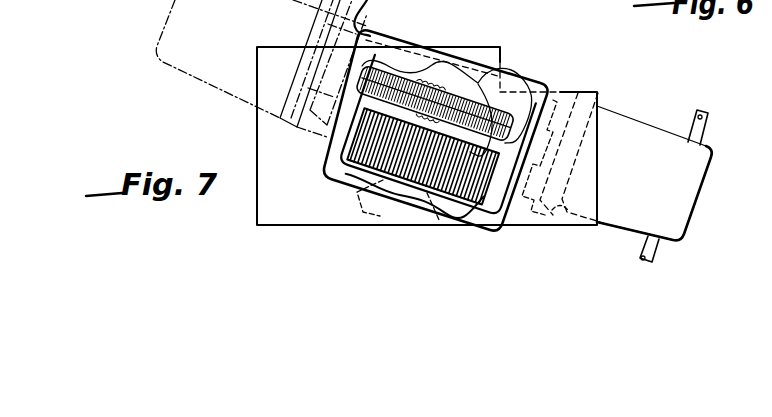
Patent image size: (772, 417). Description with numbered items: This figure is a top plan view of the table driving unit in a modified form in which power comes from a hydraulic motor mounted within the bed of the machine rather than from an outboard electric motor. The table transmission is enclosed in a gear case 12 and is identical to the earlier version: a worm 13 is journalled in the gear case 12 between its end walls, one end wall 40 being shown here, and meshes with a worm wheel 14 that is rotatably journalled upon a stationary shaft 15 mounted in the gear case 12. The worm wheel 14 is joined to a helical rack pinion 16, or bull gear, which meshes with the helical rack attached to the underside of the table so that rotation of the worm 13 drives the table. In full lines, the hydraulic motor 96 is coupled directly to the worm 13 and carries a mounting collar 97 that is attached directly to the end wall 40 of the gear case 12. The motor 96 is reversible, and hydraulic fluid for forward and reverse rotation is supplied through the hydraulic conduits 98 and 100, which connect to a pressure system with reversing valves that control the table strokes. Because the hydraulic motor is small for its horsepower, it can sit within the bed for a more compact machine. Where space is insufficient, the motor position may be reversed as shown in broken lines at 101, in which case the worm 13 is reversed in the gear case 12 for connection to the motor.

The gear case 12 is at (529, 79).
The worm 13 is at (511, 72).
The worm wheel 14 is at (400, 88).
The stationary shaft 15 is at (393, 179).
The helical rack pinion 16 is at (350, 145).
The end wall 40 is at (507, 200).
The hydraulic motor 96 is at (633, 139).
The mounting collar 97 is at (566, 94).
The hydraulic conduit 98 is at (703, 122).
The hydraulic conduit 100 is at (652, 252).
The reversed motor position 101 is at (232, 88).